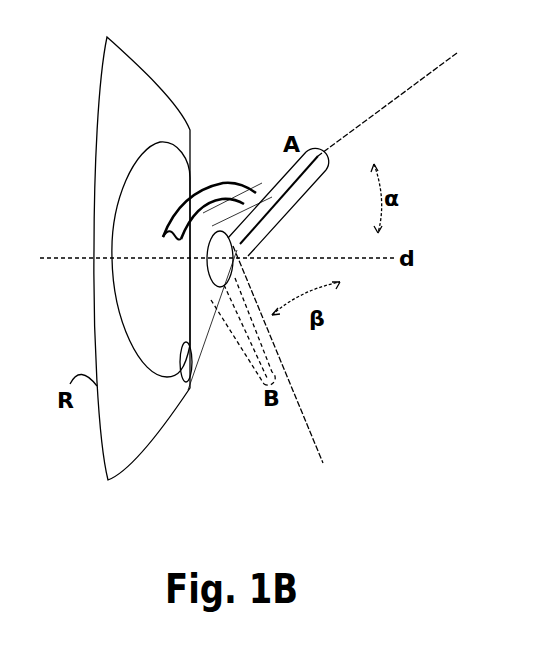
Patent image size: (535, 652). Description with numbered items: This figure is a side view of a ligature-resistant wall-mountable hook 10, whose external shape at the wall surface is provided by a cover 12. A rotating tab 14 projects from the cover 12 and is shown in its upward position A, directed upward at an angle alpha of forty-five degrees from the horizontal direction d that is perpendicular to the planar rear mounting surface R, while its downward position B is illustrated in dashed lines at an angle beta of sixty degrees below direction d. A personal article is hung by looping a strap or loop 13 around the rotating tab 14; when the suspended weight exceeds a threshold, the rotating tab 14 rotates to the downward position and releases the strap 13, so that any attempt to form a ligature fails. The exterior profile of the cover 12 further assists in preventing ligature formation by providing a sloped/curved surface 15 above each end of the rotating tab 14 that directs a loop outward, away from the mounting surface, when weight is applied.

The ligature-resistant wall-mountable hook 10 is at (405, 163).
The cover 12 is at (182, 403).
The strap or loop 13 is at (210, 182).
The rotating tab 14 is at (320, 148).
The sloped/curved surface 15 is at (223, 228).